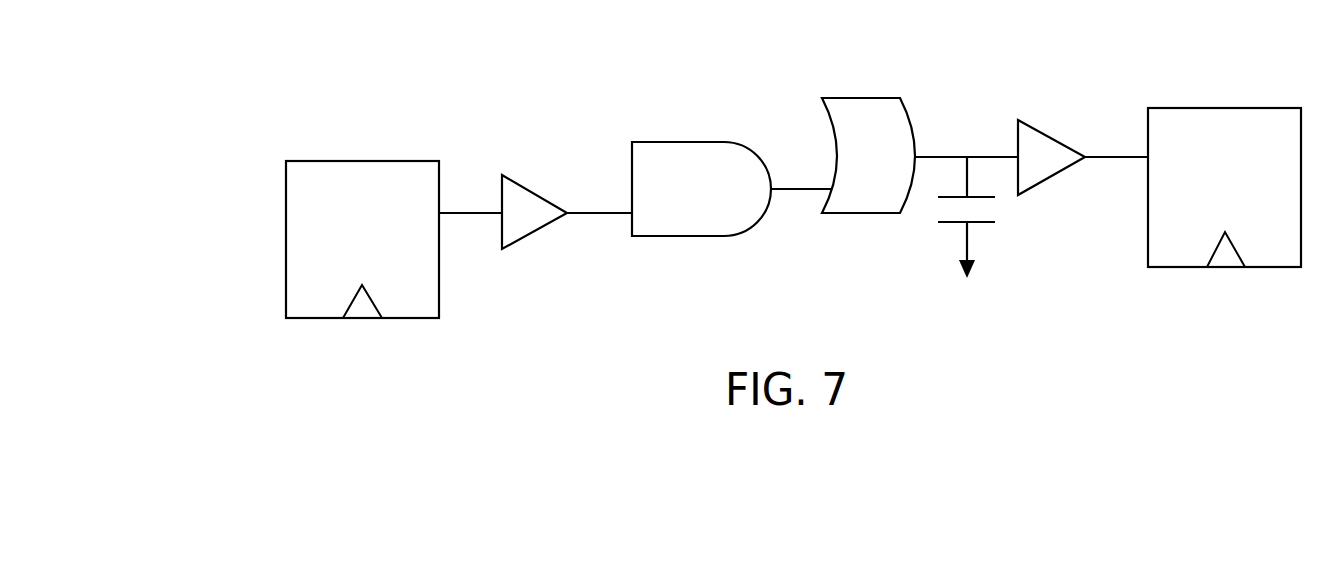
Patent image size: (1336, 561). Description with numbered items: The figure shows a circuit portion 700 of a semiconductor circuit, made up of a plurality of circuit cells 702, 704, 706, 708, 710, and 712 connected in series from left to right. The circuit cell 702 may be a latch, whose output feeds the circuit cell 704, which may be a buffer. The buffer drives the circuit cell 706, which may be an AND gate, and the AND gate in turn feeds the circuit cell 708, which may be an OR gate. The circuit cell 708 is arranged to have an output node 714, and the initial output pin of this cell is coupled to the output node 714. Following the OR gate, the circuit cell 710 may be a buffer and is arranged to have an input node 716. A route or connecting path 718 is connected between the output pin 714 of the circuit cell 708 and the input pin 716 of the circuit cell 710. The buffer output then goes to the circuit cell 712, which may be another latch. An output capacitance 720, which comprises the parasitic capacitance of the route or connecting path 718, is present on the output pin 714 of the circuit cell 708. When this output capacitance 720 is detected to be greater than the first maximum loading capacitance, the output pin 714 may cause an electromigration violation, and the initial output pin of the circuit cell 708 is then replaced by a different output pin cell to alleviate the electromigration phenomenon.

The circuit portion 700 is at (250, 53).
The circuit cell 702 is at (365, 160).
The circuit cell 704 is at (535, 238).
The circuit cell 706 is at (675, 237).
The circuit cell 708 is at (858, 215).
The circuit cell 710 is at (1052, 140).
The circuit cell 712 is at (1226, 108).
The output node 714 is at (921, 150).
The input node 716 is at (1008, 150).
The route or connecting path 718 is at (977, 150).
The output capacitance 720 is at (978, 243).